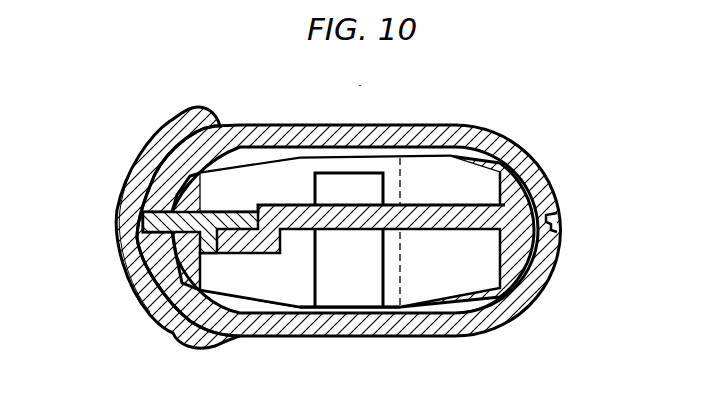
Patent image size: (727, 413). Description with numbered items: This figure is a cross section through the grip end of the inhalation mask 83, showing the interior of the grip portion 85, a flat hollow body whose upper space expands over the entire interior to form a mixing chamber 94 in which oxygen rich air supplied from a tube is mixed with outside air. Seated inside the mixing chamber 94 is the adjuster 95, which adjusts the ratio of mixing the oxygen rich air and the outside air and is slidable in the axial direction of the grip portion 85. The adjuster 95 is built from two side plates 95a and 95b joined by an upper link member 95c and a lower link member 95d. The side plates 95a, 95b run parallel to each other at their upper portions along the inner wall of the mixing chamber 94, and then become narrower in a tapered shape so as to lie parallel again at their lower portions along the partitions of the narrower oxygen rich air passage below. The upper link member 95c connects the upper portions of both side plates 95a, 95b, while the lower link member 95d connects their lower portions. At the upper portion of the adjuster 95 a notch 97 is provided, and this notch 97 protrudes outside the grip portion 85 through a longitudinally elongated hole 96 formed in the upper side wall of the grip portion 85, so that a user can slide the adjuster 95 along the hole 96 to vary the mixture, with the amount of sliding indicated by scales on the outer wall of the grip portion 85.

The inhalation mask 83 is at (369, 81).
The grip portion 85 is at (512, 130).
The mixing chamber 94 is at (470, 300).
The adjuster 95 is at (451, 163).
The side plate 95a is at (263, 283).
The side plate 95b is at (538, 296).
The upper link member 95c is at (343, 213).
The lower link member 95d is at (347, 163).
The longitudinally elongated hole 96 is at (147, 217).
The notch 97 is at (133, 170).